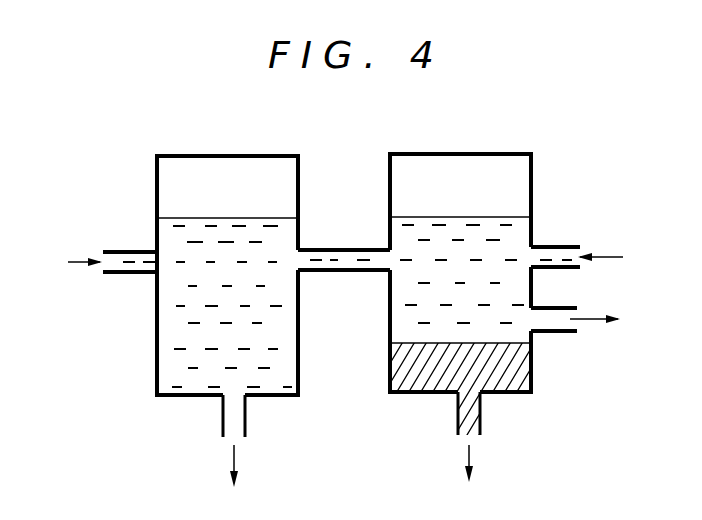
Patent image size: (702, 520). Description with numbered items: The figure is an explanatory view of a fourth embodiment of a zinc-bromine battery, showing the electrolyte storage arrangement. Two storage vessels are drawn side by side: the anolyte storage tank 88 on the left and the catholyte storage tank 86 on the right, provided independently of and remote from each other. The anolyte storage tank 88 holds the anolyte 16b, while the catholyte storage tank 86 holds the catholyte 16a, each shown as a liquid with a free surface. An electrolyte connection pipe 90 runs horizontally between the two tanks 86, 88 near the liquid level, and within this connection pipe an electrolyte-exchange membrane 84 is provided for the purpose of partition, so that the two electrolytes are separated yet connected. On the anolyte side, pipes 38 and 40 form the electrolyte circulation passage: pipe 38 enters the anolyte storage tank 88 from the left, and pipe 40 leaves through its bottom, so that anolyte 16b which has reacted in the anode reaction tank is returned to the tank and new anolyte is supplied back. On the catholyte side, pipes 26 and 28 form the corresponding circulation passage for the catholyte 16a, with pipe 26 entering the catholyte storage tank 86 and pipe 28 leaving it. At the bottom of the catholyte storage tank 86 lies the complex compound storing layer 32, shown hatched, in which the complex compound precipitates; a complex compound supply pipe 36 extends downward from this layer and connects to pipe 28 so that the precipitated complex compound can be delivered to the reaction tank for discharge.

The anolyte storage tank 88 is at (215, 155).
The catholyte storage tank 86 is at (449, 153).
The anolyte 16b is at (191, 228).
The catholyte 16a is at (518, 228).
The pipe 38 is at (122, 250).
The electrolyte-exchange membrane 84 is at (346, 269).
The electrolyte connection pipe 90 is at (334, 272).
The pipe 26 is at (550, 247).
The pipe 28 is at (563, 333).
The complex compound storing layer 32 is at (415, 380).
The complex compound supply pipe 36 is at (483, 413).
The pipe 40 is at (222, 427).